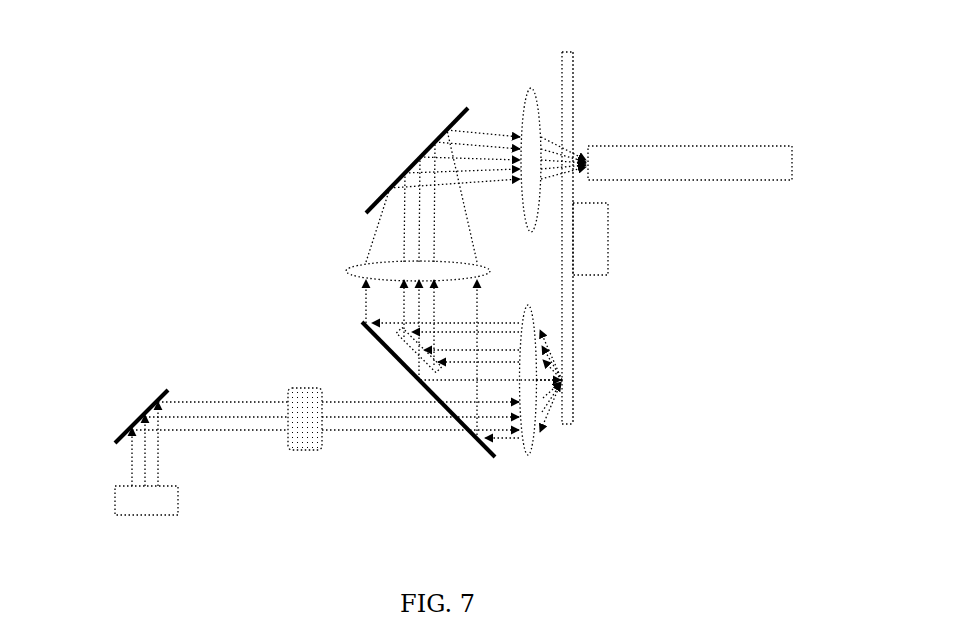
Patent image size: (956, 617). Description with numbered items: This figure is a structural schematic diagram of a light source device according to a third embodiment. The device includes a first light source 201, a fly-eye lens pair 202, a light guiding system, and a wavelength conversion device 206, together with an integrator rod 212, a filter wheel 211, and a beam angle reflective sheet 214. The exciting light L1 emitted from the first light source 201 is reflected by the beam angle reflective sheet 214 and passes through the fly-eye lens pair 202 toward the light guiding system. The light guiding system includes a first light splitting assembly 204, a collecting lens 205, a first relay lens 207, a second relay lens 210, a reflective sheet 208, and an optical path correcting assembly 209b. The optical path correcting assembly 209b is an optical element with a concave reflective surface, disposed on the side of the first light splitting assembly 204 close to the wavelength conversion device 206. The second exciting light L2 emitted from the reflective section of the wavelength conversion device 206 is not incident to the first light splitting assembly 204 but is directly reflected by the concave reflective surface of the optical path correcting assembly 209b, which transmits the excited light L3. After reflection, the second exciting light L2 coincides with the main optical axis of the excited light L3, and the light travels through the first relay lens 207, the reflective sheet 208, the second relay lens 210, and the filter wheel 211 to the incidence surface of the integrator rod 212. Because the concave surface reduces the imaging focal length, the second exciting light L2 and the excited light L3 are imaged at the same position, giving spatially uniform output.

The first light source 201 is at (178, 505).
The fly-eye lens pair 202 is at (288, 390).
The first light splitting assembly 204 is at (478, 448).
The collecting lens 205 is at (530, 455).
The wavelength conversion device 206 is at (570, 372).
The first relay lens 207 is at (350, 268).
The reflective sheet 208 is at (400, 187).
The optical path correcting assembly 209b is at (398, 340).
The second relay lens 210 is at (531, 90).
The filter wheel 211 is at (568, 78).
The integrator rod 212 is at (742, 146).
The beam angle reflective sheet 214 is at (150, 403).
The exciting light L1 is at (200, 431).
The second exciting light L2 is at (370, 322).
The excited light L3 is at (488, 268).